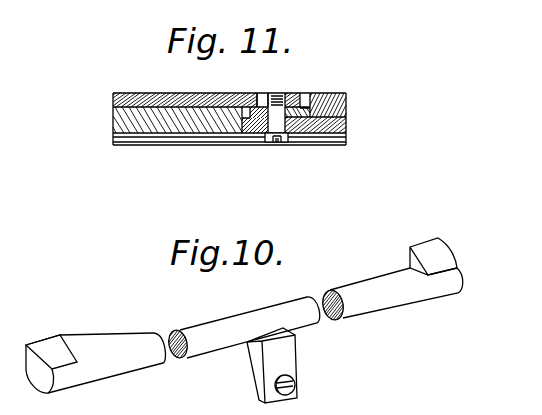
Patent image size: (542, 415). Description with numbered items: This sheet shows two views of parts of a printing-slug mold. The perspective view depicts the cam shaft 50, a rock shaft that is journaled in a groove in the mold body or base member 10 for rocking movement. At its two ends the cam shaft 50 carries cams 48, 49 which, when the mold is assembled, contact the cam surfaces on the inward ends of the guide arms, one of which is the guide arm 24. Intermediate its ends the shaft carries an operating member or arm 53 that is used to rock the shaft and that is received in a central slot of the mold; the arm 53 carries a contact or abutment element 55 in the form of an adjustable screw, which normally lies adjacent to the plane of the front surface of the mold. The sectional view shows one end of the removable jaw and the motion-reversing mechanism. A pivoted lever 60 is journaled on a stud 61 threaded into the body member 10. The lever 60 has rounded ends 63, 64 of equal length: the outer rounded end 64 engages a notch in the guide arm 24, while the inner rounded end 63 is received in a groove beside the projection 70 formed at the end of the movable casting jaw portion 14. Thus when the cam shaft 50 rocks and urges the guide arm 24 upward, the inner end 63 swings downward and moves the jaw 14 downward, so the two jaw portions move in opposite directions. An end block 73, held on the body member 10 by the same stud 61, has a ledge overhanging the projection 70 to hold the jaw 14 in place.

In FIG. 11, the mold body or base member 10 is at (139, 97).
In FIG. 11, the casting jaw portion 14 is at (170, 121).
In FIG. 11, the guide arm 24 is at (347, 105).
In FIG. 11, the pivoted lever 60 is at (287, 106).
In FIG. 11, the stud 61 is at (285, 142).
In FIG. 11, the inner rounded end of lever 63 is at (311, 95).
In FIG. 11, the rounded end of lever 64 is at (243, 108).
In FIG. 11, the projection 70 is at (257, 90).
In FIG. 11, the end block 73 is at (320, 130).
In FIG. 10, the cam 48 is at (48, 343).
In FIG. 10, the cam 49 is at (427, 247).
In FIG. 10, the cam shaft 50 is at (122, 355).
In FIG. 10, the operating member or arm 53 is at (260, 387).
In FIG. 10, the contact or abutment element 55 is at (295, 380).